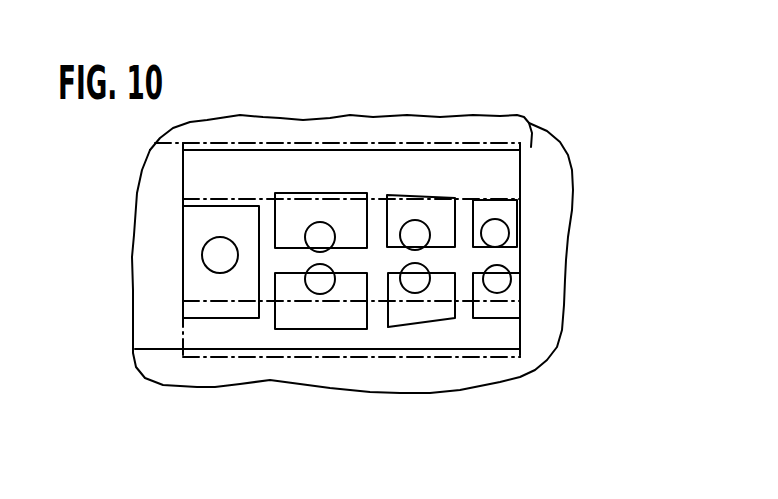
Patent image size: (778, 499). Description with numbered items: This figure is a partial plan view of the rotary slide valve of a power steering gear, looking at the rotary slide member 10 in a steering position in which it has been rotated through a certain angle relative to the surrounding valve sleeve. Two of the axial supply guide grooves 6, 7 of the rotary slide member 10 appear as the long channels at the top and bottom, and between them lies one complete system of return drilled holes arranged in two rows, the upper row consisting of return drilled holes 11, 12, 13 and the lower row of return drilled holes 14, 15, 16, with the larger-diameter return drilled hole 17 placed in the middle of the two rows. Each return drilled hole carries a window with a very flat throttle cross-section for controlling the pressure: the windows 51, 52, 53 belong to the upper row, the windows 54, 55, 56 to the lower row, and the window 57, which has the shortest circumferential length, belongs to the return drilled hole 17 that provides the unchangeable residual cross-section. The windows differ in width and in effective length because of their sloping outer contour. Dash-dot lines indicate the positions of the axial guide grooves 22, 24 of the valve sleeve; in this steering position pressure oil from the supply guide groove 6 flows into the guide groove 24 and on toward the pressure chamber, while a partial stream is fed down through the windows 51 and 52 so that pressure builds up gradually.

The supply guide groove 6 is at (337, 104).
The supply guide groove 7 is at (332, 317).
The rotary slide member 10 is at (547, 233).
The return drilled hole 11 is at (322, 238).
The return drilled hole 12 is at (410, 237).
The return drilled hole 13 is at (497, 232).
The return drilled hole 14 is at (322, 282).
The return drilled hole 15 is at (417, 282).
The return drilled hole 16 is at (497, 279).
The return drilled hole 17 is at (213, 250).
The axial guide groove 22 is at (522, 337).
The axial guide groove 24 is at (520, 192).
The window 51 is at (288, 217).
The window 52 is at (440, 217).
The window 53 is at (483, 208).
The window 54 is at (293, 313).
The window 55 is at (403, 310).
The window 56 is at (519, 294).
The window 57 is at (198, 283).